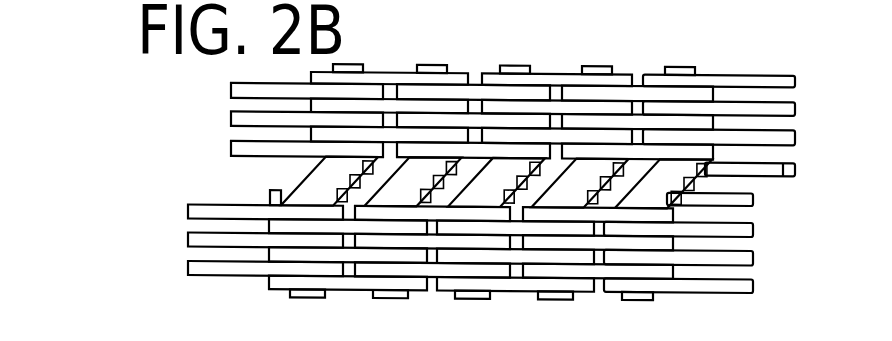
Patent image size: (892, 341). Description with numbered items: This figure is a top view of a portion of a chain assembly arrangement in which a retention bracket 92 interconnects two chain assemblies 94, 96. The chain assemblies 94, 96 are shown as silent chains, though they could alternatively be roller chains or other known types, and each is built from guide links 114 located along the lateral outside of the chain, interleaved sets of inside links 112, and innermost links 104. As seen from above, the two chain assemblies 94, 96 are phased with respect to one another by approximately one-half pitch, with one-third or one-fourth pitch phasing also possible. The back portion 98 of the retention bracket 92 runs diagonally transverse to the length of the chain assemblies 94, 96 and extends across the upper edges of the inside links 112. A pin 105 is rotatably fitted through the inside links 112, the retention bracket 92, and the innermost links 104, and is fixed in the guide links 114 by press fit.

The chain assembly 96 is at (472, 80).
The chain assembly 94 is at (150, 239).
The retention bracket 92 is at (318, 165).
The back portion 98 is at (272, 195).
The pin 105 is at (682, 66).
The guide links 114 is at (797, 82).
The inside links 112 is at (797, 111).
The innermost links 104 is at (795, 170).